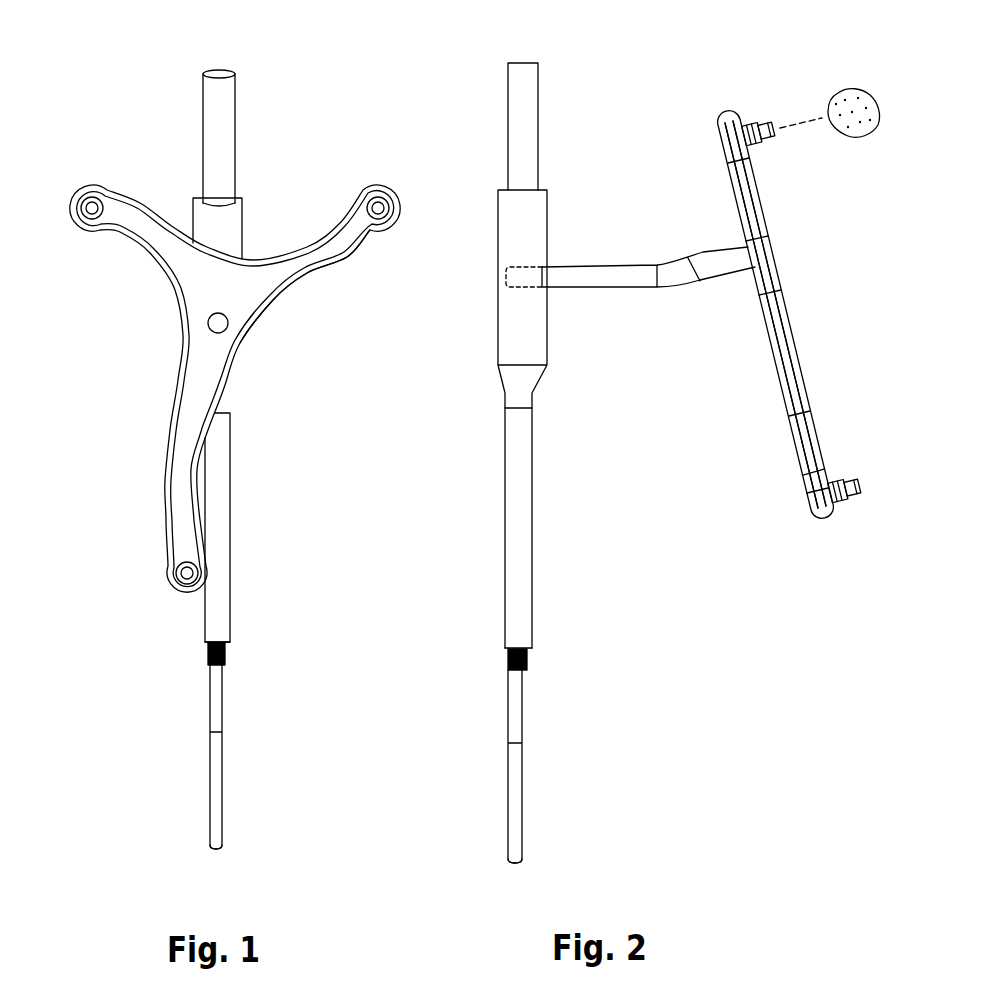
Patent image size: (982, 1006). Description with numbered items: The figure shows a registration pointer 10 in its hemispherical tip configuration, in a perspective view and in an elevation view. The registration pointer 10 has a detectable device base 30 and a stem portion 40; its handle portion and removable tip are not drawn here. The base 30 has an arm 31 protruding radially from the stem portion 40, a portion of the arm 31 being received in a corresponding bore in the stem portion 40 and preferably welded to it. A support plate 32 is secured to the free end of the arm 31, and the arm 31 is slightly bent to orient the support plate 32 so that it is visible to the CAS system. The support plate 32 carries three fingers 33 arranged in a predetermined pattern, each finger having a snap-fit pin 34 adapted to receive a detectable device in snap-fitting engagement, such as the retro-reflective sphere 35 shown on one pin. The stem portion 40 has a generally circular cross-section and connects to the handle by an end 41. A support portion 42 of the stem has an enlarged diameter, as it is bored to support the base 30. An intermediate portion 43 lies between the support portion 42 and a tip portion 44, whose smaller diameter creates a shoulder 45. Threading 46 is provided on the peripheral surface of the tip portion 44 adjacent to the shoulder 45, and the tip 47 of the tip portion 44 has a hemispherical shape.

In FIG. 1, the registration pointer 10 is at (92, 785).
In FIG. 2, the registration pointer 10 is at (455, 798).
In FIG. 1, the detectable device base 30 is at (130, 322).
In FIG. 2, the detectable device base 30 is at (588, 247).
In FIG. 1, the arm 31 is at (222, 327).
In FIG. 2, the arm 31 is at (598, 286).
In FIG. 1, the support plate 32 is at (270, 290).
In FIG. 2, the support plate 32 is at (775, 307).
In FIG. 1, the fingers 33 is at (130, 207).
In FIG. 2, the fingers 33 is at (747, 183).
In FIG. 1, the snap-fit pin 34 is at (90, 207).
In FIG. 2, the snap-fit pin 34 is at (762, 127).
In FIG. 2, the retro-reflective sphere 35 is at (848, 138).
In FIG. 1, the stem portion 40 is at (163, 648).
In FIG. 2, the stem portion 40 is at (480, 632).
In FIG. 1, the end 41 is at (235, 128).
In FIG. 2, the end 41 is at (538, 133).
In FIG. 1, the support portion 42 is at (242, 225).
In FIG. 2, the support portion 42 is at (547, 220).
In FIG. 1, the intermediate portion 43 is at (227, 512).
In FIG. 2, the intermediate portion 43 is at (532, 525).
In FIG. 1, the tip portion 44 is at (217, 733).
In FIG. 2, the tip portion 44 is at (522, 732).
In FIG. 1, the shoulder 45 is at (230, 648).
In FIG. 2, the shoulder 45 is at (527, 650).
In FIG. 1, the threading 46 is at (222, 655).
In FIG. 2, the threading 46 is at (525, 668).
In FIG. 1, the tip 47 is at (217, 848).
In FIG. 2, the tip 47 is at (518, 863).